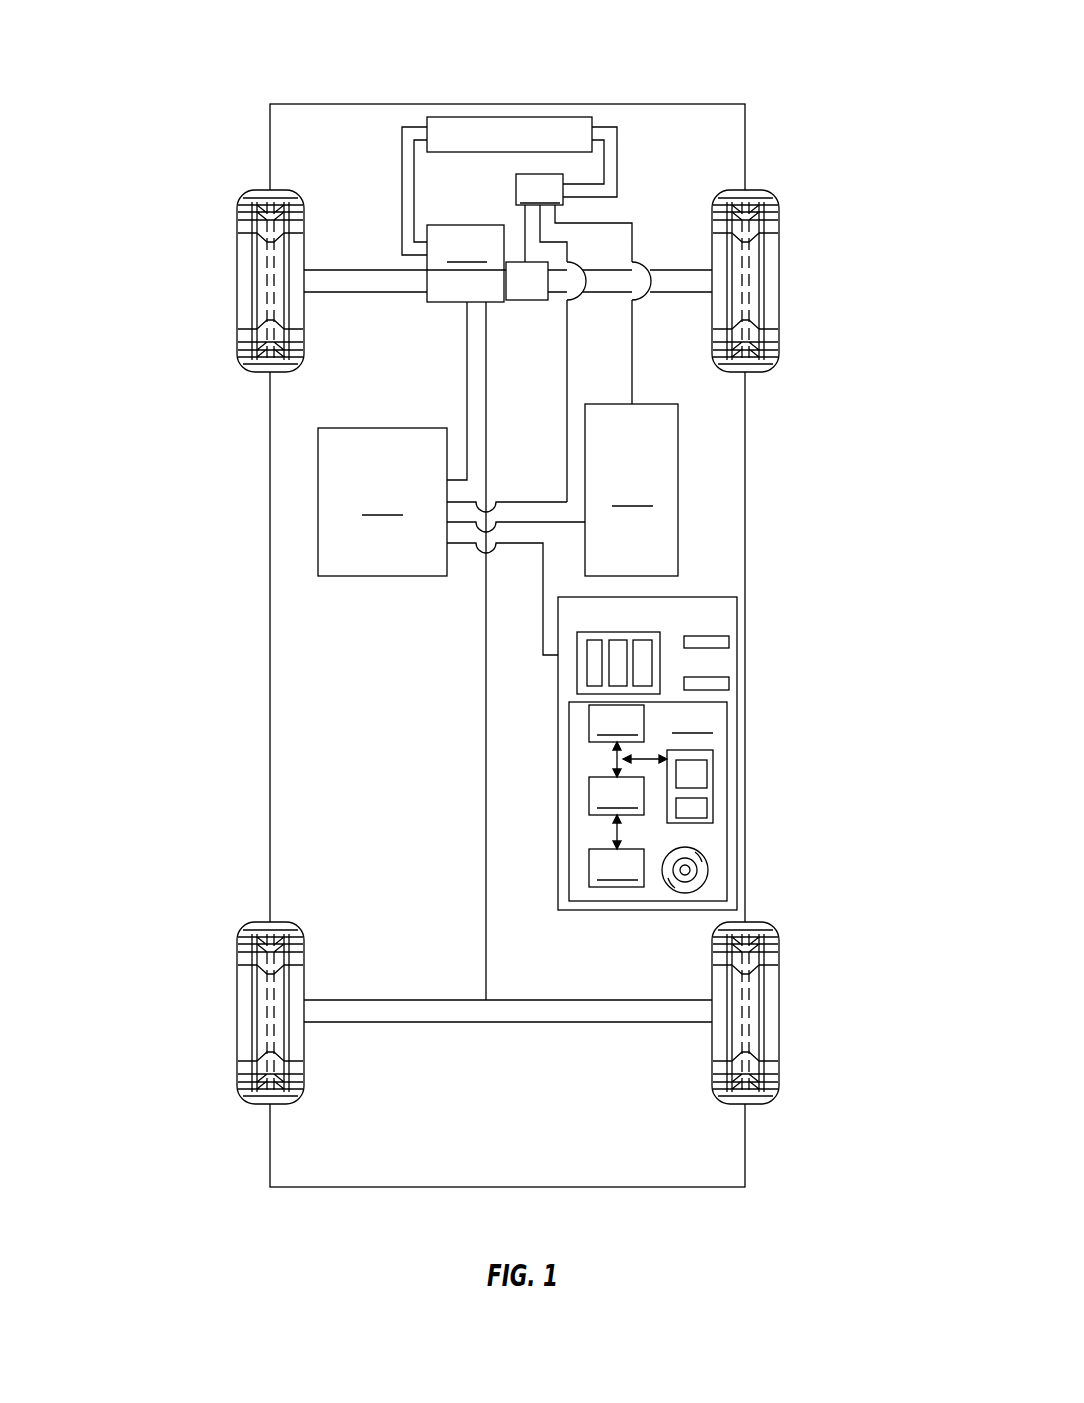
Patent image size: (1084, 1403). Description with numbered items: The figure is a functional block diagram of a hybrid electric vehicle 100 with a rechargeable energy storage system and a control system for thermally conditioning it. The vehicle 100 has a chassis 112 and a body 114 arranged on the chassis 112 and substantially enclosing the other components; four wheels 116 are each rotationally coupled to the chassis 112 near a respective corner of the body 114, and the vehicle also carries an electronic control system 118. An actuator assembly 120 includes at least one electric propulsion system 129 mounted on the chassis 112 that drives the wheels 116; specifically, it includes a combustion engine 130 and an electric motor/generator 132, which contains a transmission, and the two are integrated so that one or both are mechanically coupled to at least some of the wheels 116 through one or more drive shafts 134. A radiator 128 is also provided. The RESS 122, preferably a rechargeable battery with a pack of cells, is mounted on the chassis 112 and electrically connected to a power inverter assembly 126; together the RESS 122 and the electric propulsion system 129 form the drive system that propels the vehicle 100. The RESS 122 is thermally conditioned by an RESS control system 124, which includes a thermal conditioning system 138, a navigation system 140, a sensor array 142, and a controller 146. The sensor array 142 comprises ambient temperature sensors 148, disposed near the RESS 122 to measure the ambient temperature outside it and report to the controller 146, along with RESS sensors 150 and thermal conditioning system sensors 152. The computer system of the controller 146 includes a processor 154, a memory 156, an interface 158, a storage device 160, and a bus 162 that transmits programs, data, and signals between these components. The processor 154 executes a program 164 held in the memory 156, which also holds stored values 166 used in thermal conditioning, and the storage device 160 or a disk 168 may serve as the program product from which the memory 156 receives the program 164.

The vehicle 100 is at (230, 56).
The chassis 112 is at (486, 728).
The body 114 is at (270, 590).
The wheels 116 is at (237, 280).
The electronic control system 118 is at (451, 541).
The actuator assembly 120 is at (505, 312).
The rechargeable energy storage system (RESS) 122 is at (631, 490).
The RESS control system 124 is at (728, 606).
The power inverter assembly 126 is at (583, 338).
The radiator 128 is at (500, 117).
The electric propulsion system 129 is at (519, 262).
The combustion engine 130 is at (465, 352).
The electric motor/generator 132 is at (527, 281).
The drive shafts 134 is at (368, 268).
The thermal conditioning system 138 is at (722, 686).
The navigation system 140 is at (722, 645).
The sensor array 142 is at (607, 631).
The controller 146 is at (648, 801).
The ambient temperature sensors 148 is at (592, 664).
The RESS sensors 150 is at (622, 648).
The thermal conditioning system sensors 152 is at (643, 663).
The processor 154 is at (616, 723).
The memory 156 is at (708, 753).
The interface 158 is at (616, 796).
The storage device 160 is at (616, 868).
The bus 162 is at (612, 759).
The program 164 is at (698, 776).
The stored values 166 is at (698, 809).
The disk 168 is at (703, 870).